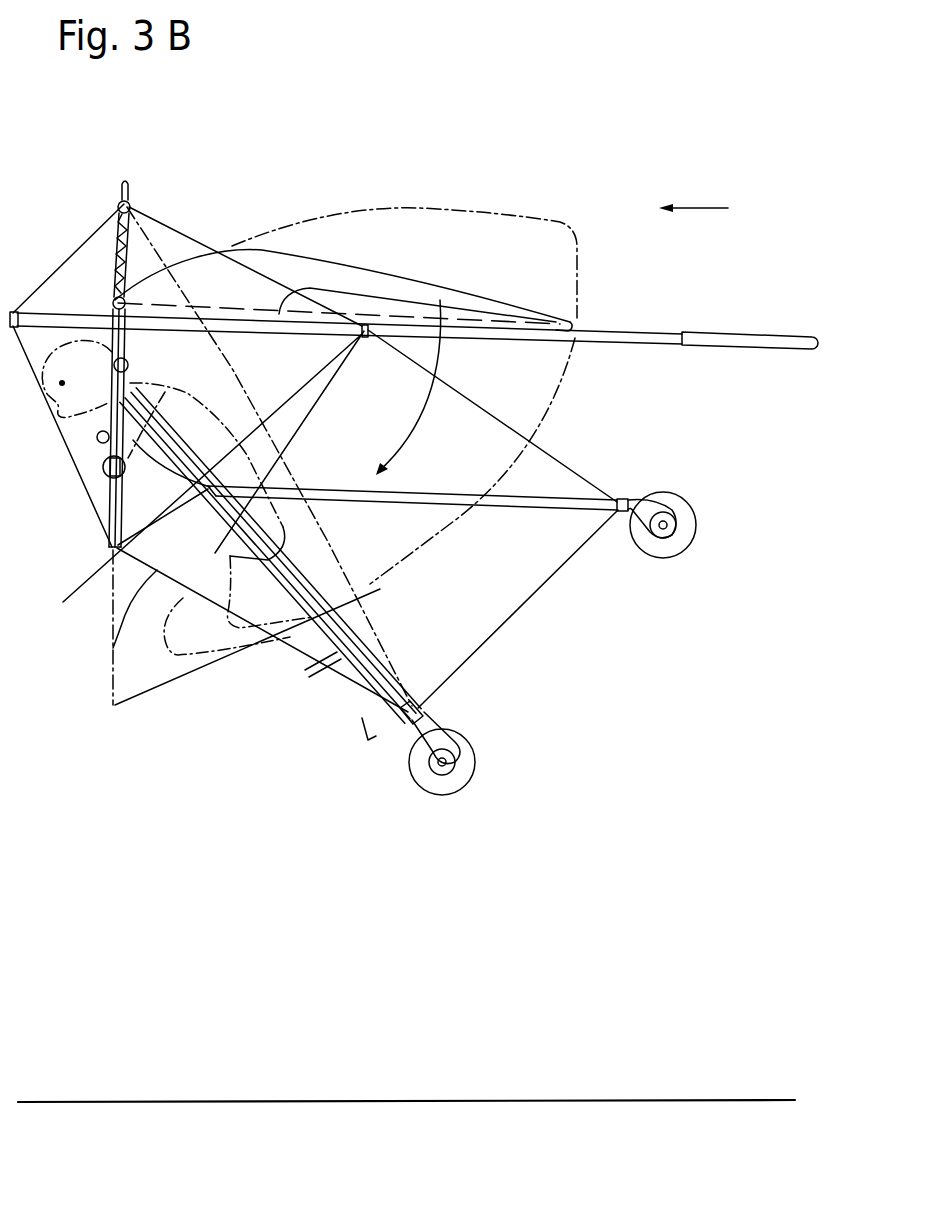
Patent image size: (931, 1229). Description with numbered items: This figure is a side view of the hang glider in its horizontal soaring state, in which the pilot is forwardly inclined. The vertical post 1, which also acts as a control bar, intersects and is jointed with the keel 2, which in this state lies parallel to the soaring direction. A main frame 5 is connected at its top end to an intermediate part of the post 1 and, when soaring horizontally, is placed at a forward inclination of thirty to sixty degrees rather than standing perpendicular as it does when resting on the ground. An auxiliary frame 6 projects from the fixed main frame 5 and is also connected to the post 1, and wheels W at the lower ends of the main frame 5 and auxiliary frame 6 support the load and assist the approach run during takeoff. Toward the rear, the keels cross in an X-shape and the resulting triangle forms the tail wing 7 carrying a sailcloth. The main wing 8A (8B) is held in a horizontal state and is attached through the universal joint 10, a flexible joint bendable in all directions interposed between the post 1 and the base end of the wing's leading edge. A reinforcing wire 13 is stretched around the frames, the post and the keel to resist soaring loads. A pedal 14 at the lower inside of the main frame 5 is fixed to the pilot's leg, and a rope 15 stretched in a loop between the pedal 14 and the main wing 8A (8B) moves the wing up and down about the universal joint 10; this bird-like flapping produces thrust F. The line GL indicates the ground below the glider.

The post 1 is at (110, 508).
The keel 2 is at (266, 320).
The main frame 5 is at (347, 670).
The auxiliary frame 6 is at (545, 508).
The tail wing 7 is at (737, 334).
The left main wing 8A is at (403, 282).
The right main wing 8B is at (404, 341).
The universal joint 10 is at (113, 300).
The reinforcing wire 13 is at (530, 423).
The pedal 14 is at (427, 703).
The rope 15 is at (140, 200).
The wheel W is at (692, 493).
The thrust F is at (731, 177).
The ground line GL is at (406, 1085).